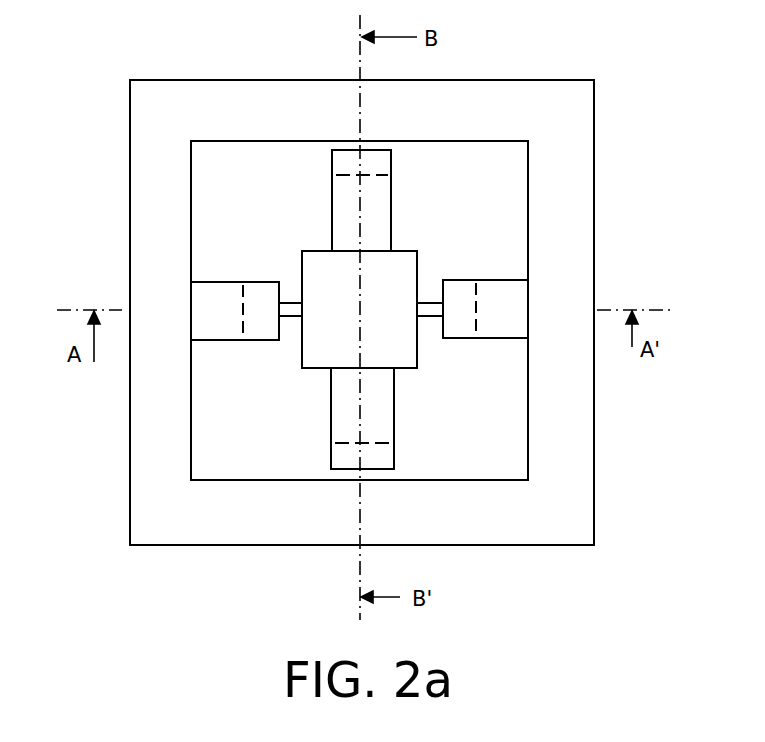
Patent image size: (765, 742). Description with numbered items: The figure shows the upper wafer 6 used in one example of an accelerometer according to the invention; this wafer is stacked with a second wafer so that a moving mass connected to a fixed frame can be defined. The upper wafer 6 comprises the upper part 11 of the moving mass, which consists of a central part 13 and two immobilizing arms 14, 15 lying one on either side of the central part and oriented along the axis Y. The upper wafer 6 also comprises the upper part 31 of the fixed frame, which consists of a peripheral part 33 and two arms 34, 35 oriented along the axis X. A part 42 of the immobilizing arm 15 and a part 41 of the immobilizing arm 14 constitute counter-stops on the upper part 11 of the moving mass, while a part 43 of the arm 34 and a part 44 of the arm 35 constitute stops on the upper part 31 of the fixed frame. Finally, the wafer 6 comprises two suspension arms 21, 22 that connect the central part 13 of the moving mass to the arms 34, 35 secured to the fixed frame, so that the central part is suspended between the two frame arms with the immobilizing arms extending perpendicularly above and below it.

The upper wafer 6 is at (590, 100).
The upper part of the fixed frame 31 is at (594, 220).
The peripheral part 33 is at (570, 462).
The upper part of the moving mass 11 is at (302, 368).
The central part 13 is at (393, 273).
The immobilizing arm 15 is at (373, 196).
The immobilizing arm 14 is at (380, 425).
The part of the immobilizing arm 42 is at (340, 163).
The part of the immobilizing arm 41 is at (342, 455).
The arm 34 is at (218, 316).
The arm 35 is at (503, 320).
The part of the arm 43 is at (257, 297).
The part of the arm 44 is at (465, 291).
The suspension arm 21 is at (290, 318).
The suspension arm 22 is at (430, 318).